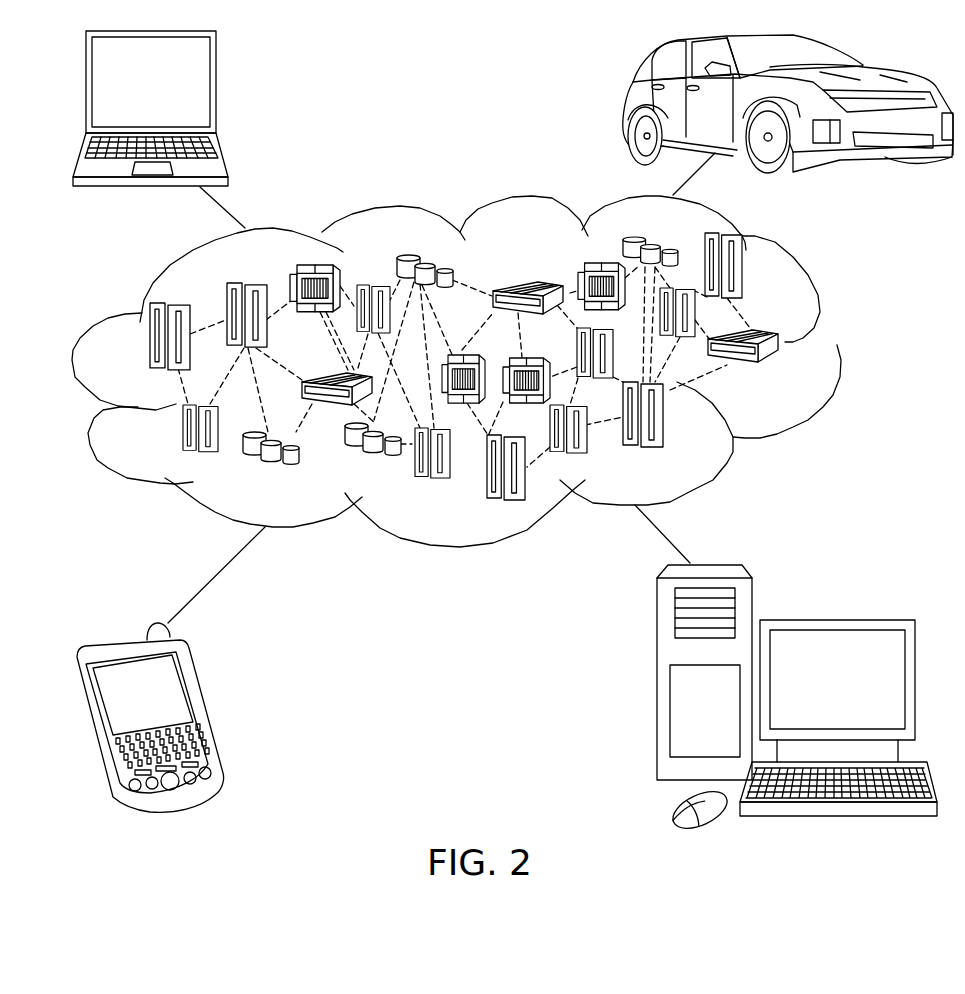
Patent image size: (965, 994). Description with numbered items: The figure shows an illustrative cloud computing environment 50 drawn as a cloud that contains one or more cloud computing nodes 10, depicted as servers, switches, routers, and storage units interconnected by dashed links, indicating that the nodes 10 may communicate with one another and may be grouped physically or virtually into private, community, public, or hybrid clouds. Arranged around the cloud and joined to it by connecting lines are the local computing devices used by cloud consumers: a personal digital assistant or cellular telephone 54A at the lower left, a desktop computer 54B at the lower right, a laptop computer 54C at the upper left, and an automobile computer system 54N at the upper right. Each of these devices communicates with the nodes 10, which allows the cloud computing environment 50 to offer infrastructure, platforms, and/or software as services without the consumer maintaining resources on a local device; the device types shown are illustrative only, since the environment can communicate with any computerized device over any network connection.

The laptop computer 54C is at (216, 89).
The automobile computer system 54N is at (629, 104).
The personal digital assistant or cellular telephone 54A is at (203, 709).
The desktop computer 54B is at (833, 619).
The cloud computing environment 50 is at (837, 345).
The cloud computing node 10 is at (791, 373).